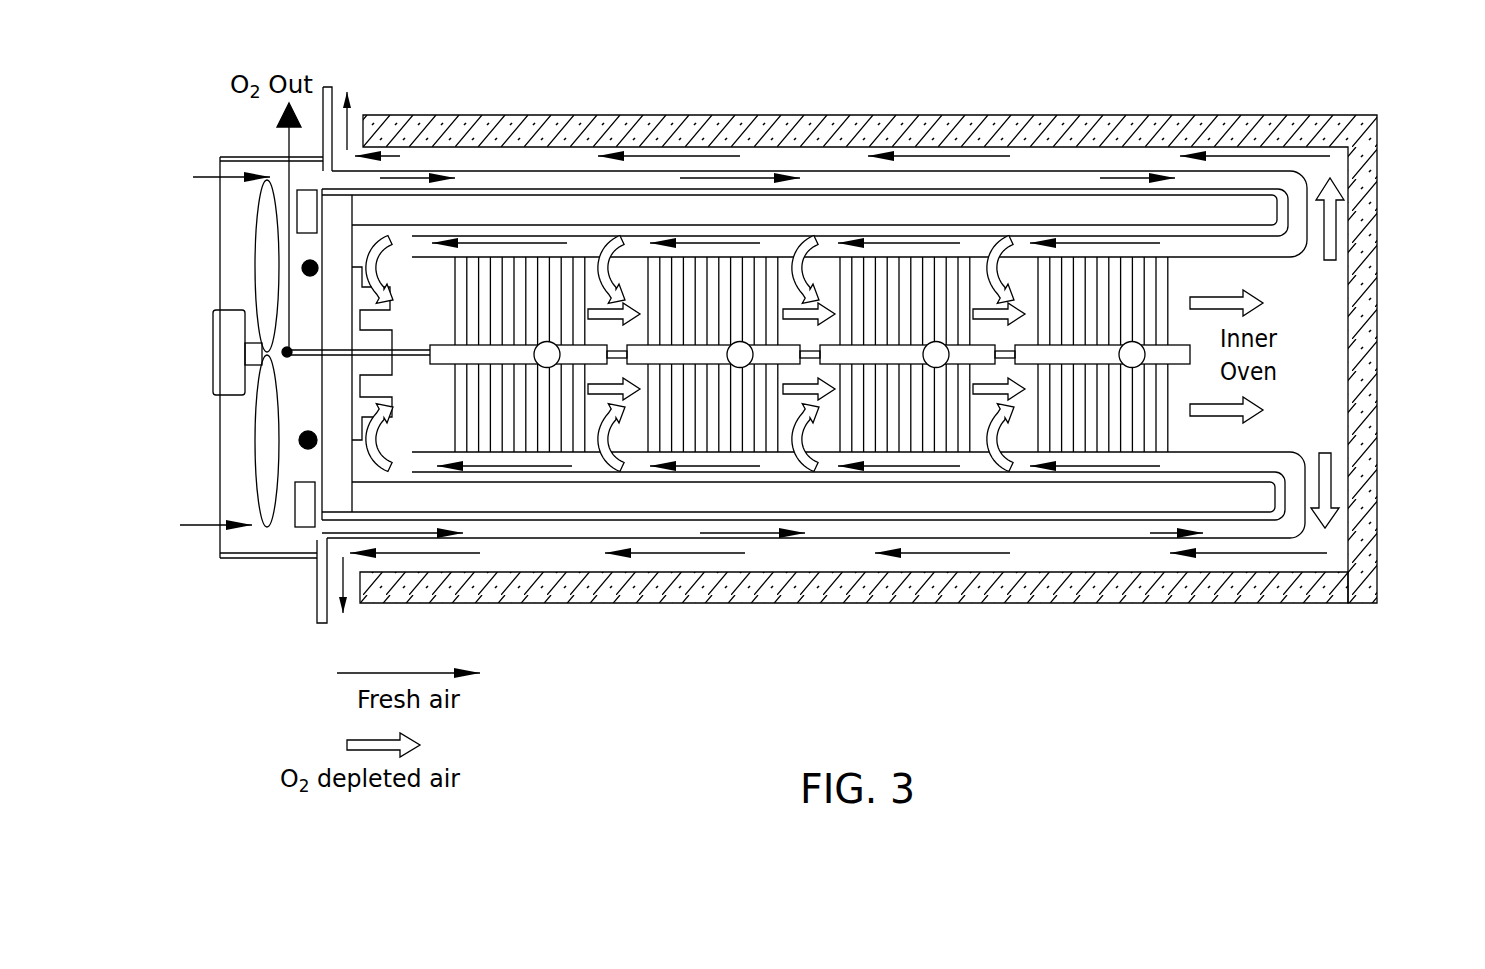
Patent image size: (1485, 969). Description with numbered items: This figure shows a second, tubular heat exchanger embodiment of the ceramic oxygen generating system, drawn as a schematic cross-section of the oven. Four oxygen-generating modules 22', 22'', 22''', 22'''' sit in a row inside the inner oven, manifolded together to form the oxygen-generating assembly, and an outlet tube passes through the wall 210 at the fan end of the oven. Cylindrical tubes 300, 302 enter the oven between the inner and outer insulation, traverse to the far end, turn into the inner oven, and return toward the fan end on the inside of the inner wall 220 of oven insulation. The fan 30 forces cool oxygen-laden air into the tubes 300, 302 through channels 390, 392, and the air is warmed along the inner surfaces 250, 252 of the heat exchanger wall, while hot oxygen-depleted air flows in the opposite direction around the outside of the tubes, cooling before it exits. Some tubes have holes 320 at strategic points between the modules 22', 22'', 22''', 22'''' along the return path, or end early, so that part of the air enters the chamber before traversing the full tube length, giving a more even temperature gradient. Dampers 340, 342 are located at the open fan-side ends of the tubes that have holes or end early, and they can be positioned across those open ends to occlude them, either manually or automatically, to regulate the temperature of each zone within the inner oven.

The wall 210 is at (337, 227).
The oxygen-generating module 22' is at (528, 466).
The oxygen-generating module 22'' is at (723, 244).
The oxygen-generating module 22''' is at (917, 244).
The oxygen-generating module 22'''' is at (1116, 244).
The inner wall 220 is at (845, 200).
The channel 390 is at (1072, 160).
The channel 392 is at (1073, 553).
The cylindrical tube 300 is at (1262, 176).
The cylindrical tube 302 is at (1288, 522).
The inner surface of the heat exchanger wall 250 is at (1262, 205).
The inner surface of the heat exchanger wall 252 is at (1262, 493).
The damper 340 is at (310, 215).
The damper 342 is at (310, 522).
The fan 30 is at (264, 542).
The holes 320 is at (625, 462).